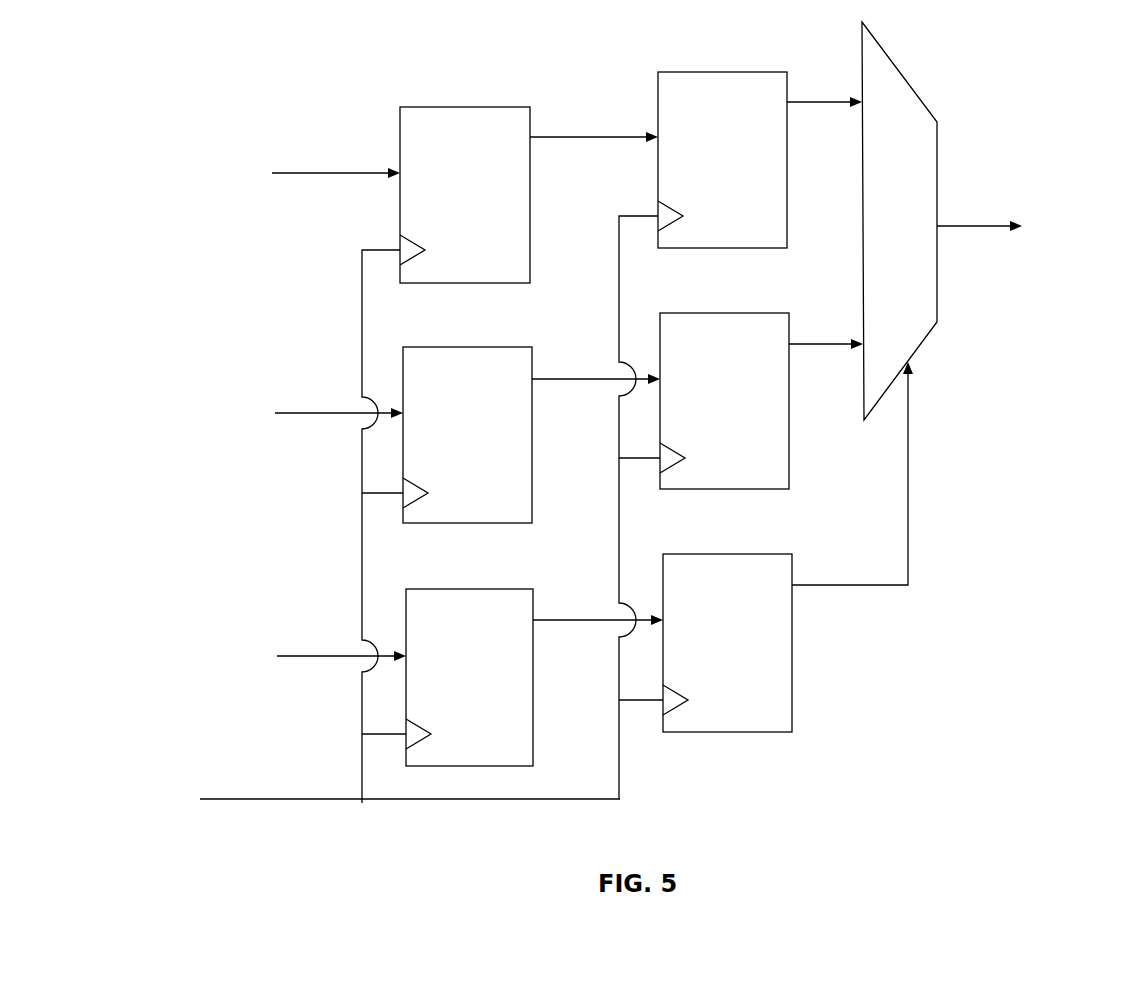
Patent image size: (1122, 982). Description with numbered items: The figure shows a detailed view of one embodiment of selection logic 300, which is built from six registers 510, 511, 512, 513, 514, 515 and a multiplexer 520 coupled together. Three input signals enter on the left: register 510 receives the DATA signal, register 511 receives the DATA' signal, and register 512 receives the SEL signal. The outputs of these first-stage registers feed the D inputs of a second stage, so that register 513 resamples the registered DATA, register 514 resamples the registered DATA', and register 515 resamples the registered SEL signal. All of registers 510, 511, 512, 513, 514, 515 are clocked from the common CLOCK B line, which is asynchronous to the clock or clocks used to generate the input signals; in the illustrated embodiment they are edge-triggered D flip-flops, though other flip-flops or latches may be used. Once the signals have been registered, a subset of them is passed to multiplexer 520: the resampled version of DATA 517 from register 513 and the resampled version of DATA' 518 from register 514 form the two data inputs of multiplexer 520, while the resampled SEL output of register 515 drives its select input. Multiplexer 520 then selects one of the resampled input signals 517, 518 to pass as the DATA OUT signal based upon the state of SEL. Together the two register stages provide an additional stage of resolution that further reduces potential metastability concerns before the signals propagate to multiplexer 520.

The selection logic 300 is at (252, 57).
The register 510 is at (488, 217).
The register 511 is at (491, 461).
The register 512 is at (493, 701).
The register 513 is at (746, 184).
The register 514 is at (748, 425).
The register 515 is at (751, 666).
The resampled version of DATA 517 is at (813, 103).
The resampled version of DATA' 518 is at (817, 345).
The multiplexer (MUX) 520 is at (920, 192).